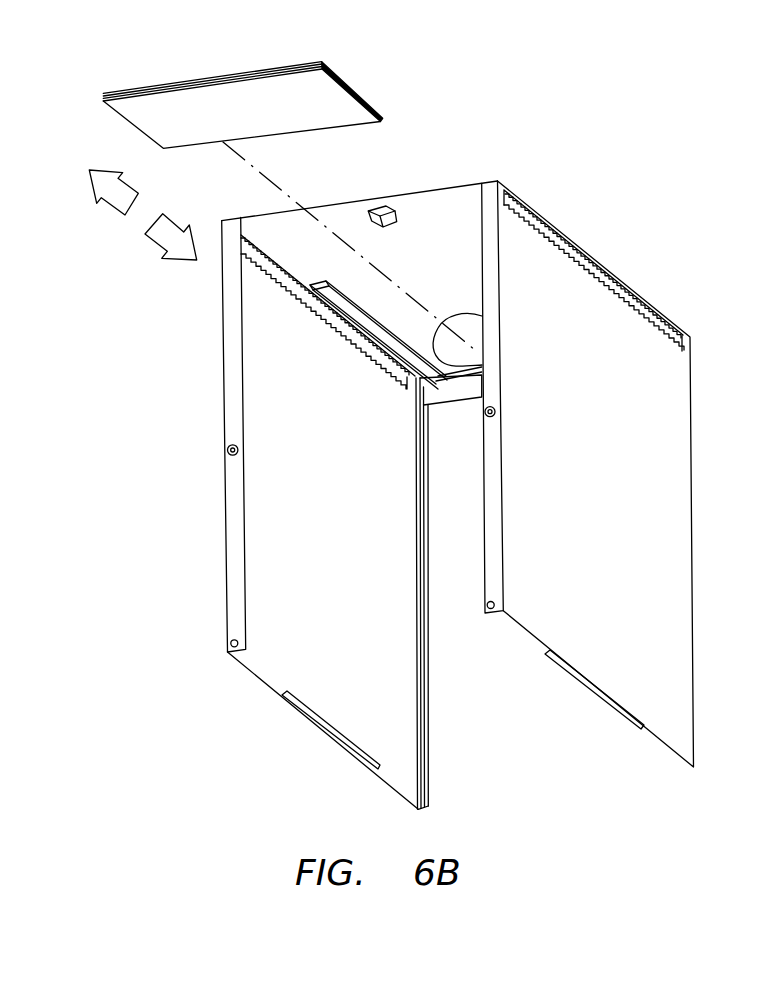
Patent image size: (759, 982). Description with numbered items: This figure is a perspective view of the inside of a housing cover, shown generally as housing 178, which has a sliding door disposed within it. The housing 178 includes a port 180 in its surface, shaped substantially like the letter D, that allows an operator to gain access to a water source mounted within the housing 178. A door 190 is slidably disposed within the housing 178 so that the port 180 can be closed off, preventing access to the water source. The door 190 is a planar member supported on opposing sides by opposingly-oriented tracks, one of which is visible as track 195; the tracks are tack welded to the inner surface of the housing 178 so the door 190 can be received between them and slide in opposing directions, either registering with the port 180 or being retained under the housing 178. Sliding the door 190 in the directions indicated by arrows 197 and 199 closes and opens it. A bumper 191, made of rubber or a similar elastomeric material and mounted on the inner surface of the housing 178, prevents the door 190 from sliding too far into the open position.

The housing 178 is at (604, 102).
The port 180 is at (470, 332).
The door 190 is at (363, 92).
The bumper 191 is at (382, 206).
The track 195 is at (362, 326).
The arrow 197 is at (155, 247).
The arrow 199 is at (112, 211).